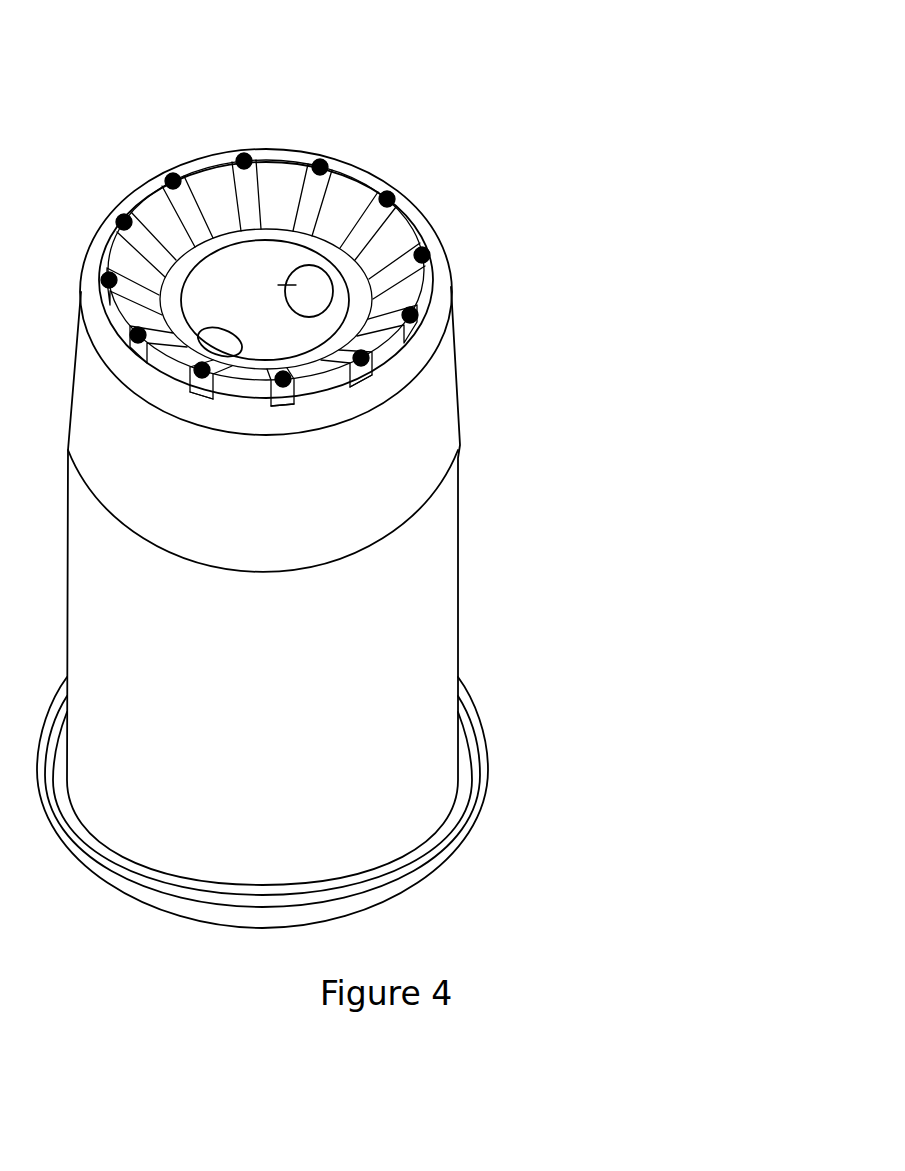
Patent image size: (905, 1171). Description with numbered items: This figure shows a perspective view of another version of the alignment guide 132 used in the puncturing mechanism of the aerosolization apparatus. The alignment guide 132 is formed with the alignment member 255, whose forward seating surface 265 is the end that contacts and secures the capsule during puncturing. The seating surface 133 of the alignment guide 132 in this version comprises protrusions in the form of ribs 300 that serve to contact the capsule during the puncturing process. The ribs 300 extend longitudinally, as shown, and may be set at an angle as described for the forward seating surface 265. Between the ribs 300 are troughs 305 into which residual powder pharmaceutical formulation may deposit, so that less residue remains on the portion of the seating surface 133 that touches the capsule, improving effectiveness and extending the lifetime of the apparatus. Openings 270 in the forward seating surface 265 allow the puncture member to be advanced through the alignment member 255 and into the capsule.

The alignment guide 132 is at (468, 78).
The seating surface 133 is at (226, 186).
The alignment member 255 is at (465, 190).
The forward seating surface 265 is at (284, 188).
The openings 270 is at (232, 332).
The ribs 300 is at (426, 263).
The troughs 305 is at (385, 368).